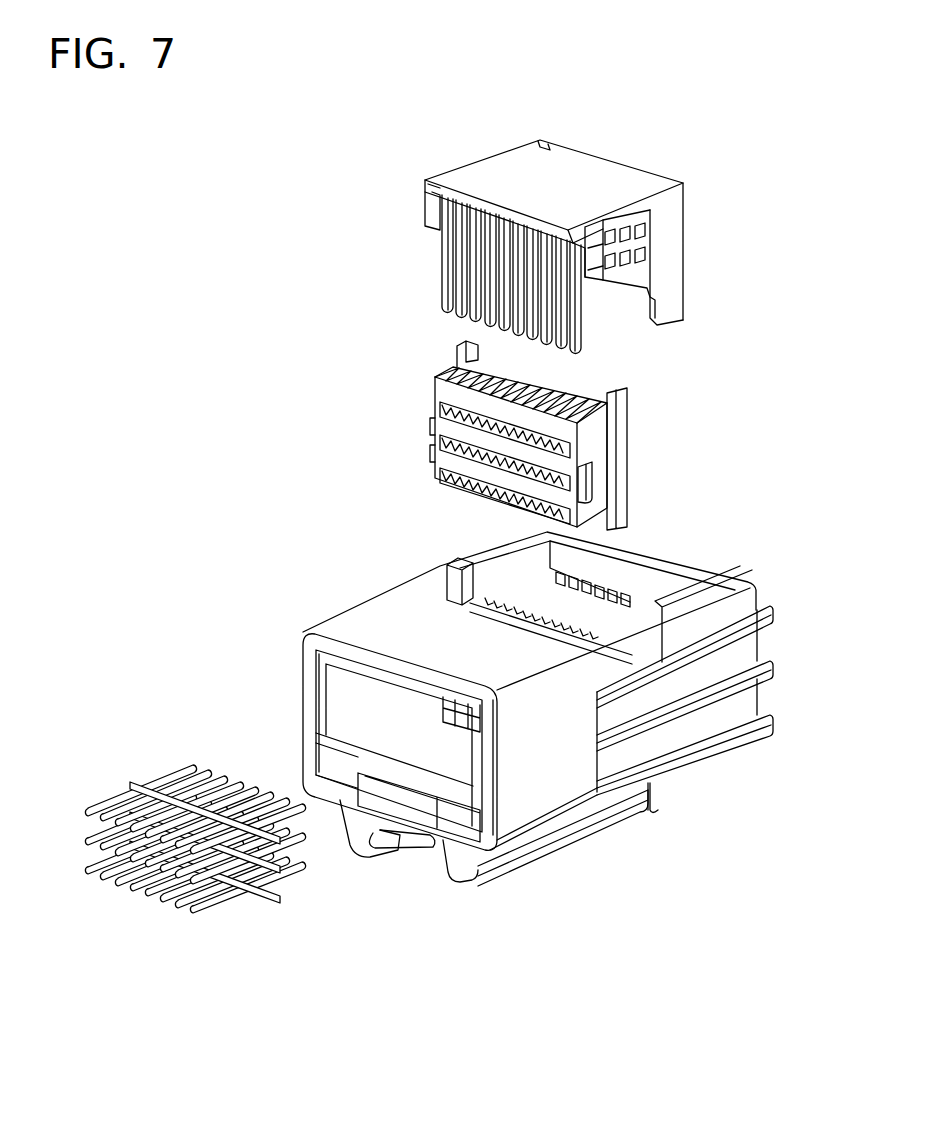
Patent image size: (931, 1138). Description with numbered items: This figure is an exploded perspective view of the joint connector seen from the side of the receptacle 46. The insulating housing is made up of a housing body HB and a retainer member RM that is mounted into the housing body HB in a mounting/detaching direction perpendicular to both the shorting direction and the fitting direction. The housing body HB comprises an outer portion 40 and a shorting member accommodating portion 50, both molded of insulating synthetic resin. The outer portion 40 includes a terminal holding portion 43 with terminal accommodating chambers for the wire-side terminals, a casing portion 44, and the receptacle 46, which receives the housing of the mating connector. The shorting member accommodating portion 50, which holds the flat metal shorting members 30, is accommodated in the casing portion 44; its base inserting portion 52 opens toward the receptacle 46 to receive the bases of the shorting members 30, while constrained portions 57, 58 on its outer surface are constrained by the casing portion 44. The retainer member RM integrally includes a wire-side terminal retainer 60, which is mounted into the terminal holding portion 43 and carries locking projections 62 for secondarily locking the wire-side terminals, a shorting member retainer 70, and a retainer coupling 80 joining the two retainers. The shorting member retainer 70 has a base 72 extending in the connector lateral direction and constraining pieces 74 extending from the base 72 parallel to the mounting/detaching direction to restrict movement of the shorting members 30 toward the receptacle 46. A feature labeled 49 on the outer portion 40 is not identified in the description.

The retainer member RM is at (628, 145).
The retainer coupling 80 is at (504, 158).
The base 72 is at (450, 208).
The shorting member retainer 70 is at (437, 252).
The constraining pieces 74 is at (460, 275).
The wire-side terminal retainer 60 is at (690, 247).
The locking projections 62 is at (612, 290).
The shorting member accommodating portion 50 is at (423, 392).
The base inserting portion 52 is at (440, 472).
The constrained portion 57 is at (597, 480).
The constrained portion 58 is at (627, 420).
The outer portion 40 is at (563, 858).
The housing body HB is at (376, 584).
The casing portion 44 is at (442, 568).
The receptacle 46 is at (334, 620).
The side latch block 49 is at (672, 588).
The terminal holding portion 43 is at (705, 725).
The shorting member 30 is at (85, 850).